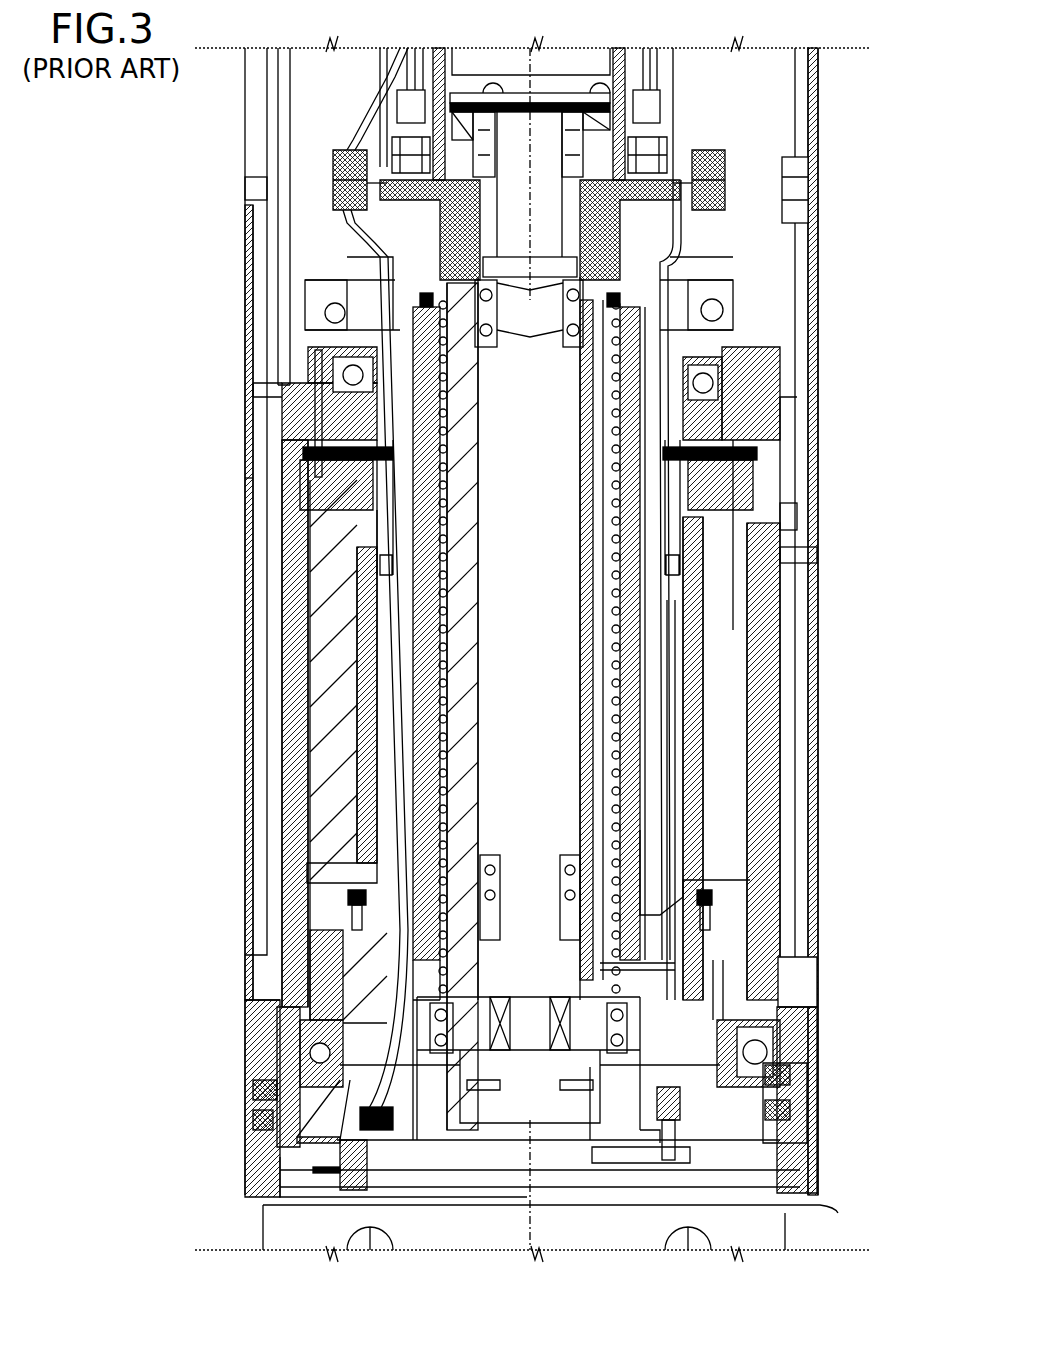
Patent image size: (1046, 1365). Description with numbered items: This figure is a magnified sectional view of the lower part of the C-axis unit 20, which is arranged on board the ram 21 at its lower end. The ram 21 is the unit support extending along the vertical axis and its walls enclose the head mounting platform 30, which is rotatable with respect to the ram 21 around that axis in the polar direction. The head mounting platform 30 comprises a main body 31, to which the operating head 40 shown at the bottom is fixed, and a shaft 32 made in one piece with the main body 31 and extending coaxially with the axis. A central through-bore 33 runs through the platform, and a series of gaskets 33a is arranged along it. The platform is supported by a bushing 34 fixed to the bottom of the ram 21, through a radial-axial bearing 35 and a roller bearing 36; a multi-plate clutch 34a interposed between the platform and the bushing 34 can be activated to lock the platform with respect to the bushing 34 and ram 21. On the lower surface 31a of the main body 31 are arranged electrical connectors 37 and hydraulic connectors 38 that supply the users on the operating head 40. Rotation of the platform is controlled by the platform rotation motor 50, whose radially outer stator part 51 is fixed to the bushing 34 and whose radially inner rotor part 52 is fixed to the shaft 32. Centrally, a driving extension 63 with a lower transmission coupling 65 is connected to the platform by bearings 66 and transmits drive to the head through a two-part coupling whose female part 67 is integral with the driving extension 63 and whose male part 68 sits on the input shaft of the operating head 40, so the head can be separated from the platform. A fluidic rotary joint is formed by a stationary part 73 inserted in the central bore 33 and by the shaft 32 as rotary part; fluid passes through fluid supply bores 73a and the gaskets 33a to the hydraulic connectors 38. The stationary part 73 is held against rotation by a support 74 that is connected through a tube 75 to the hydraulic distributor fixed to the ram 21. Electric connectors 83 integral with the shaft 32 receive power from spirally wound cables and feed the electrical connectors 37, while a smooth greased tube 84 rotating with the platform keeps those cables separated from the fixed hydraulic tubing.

The C-axis unit 20 is at (210, 477).
The ram 21 is at (240, 291).
The head mounting platform 30 is at (228, 1043).
The main body 31 is at (800, 1182).
The lower surface 31a is at (415, 1135).
The shaft 32 is at (690, 812).
The central through-bore 33 is at (465, 672).
The gaskets 33a is at (400, 597).
The bushing 34 is at (762, 860).
The multi-plate clutch 34a is at (788, 475).
The radial-axial bearing 35 is at (782, 1050).
The roller bearing 36 is at (735, 296).
The electrical connectors 37 is at (345, 1112).
The hydraulic connectors 38 is at (792, 1128).
The operating head 40 is at (258, 1229).
The platform rotation motor 50 is at (278, 625).
The stator part 51 is at (340, 667).
The rotor part 52 is at (355, 757).
The driving extension 63 is at (560, 655).
The lower transmission coupling 65 is at (612, 107).
The bearings 66 is at (398, 833).
The female part of the coupling 67 is at (630, 1037).
The male part of the coupling 68 is at (682, 1100).
The stationary part of the rotary joint 73 is at (463, 396).
The fluid supply bores 73a is at (627, 732).
The support 74 is at (388, 212).
The tube 75 is at (398, 80).
The electric connectors 83 is at (333, 175).
The tube 84 is at (676, 130).